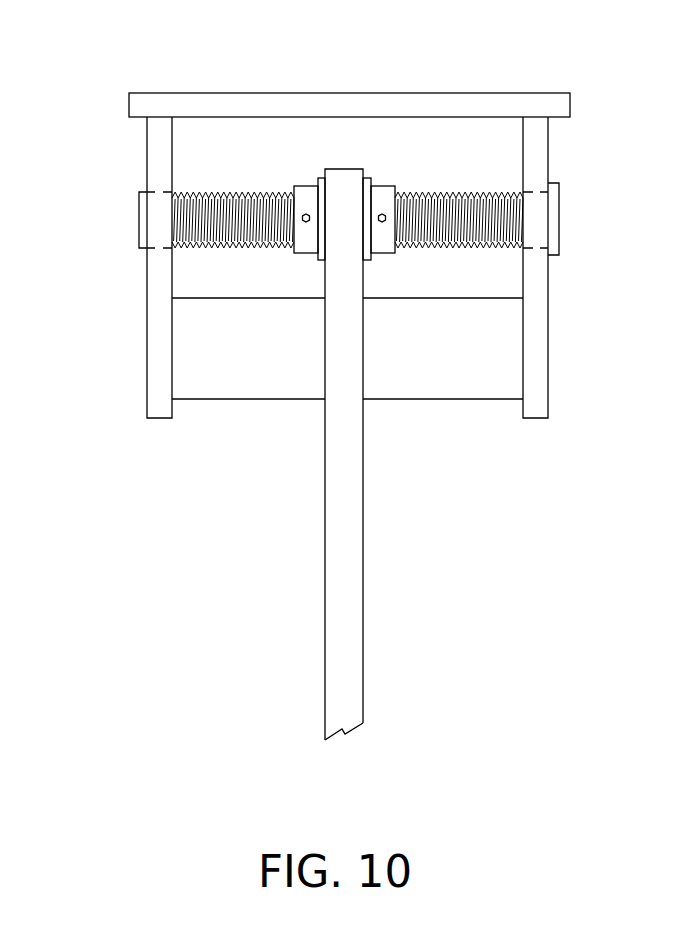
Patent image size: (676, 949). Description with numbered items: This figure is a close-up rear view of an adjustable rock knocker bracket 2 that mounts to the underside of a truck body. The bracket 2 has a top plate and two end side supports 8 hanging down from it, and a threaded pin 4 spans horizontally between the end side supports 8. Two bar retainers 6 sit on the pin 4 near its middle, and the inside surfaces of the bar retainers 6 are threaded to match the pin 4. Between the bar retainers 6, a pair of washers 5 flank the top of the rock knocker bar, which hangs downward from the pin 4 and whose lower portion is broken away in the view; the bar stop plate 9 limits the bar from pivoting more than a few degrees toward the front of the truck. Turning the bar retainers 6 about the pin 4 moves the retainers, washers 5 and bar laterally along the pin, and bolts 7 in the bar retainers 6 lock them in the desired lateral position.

The rock knocker bracket 2 is at (148, 68).
The threaded pin 4 is at (252, 243).
The washer 5 is at (367, 180).
The bar retainer 6 is at (382, 192).
The bolt 7 is at (307, 212).
The end side support 8 is at (160, 330).
The bar stop plate 9 is at (433, 357).